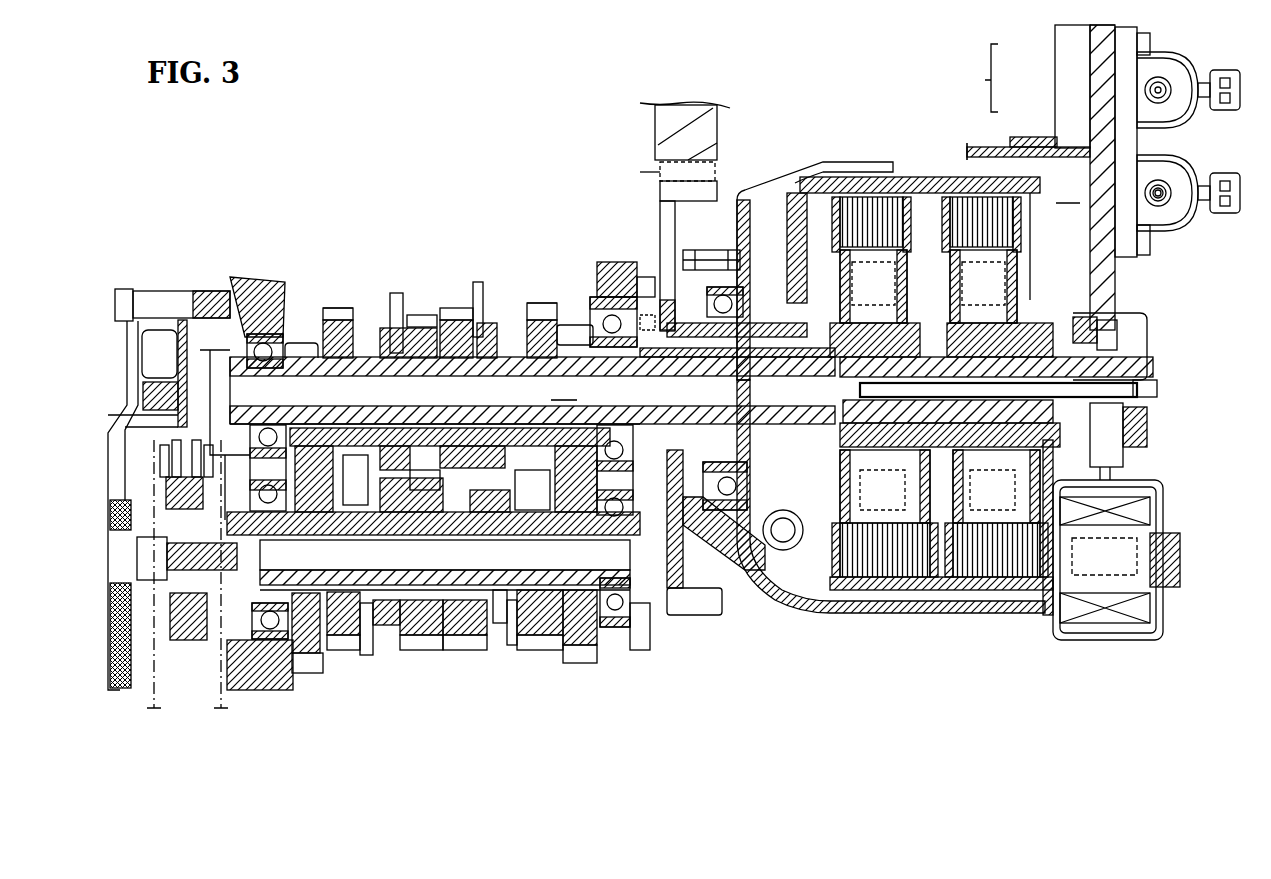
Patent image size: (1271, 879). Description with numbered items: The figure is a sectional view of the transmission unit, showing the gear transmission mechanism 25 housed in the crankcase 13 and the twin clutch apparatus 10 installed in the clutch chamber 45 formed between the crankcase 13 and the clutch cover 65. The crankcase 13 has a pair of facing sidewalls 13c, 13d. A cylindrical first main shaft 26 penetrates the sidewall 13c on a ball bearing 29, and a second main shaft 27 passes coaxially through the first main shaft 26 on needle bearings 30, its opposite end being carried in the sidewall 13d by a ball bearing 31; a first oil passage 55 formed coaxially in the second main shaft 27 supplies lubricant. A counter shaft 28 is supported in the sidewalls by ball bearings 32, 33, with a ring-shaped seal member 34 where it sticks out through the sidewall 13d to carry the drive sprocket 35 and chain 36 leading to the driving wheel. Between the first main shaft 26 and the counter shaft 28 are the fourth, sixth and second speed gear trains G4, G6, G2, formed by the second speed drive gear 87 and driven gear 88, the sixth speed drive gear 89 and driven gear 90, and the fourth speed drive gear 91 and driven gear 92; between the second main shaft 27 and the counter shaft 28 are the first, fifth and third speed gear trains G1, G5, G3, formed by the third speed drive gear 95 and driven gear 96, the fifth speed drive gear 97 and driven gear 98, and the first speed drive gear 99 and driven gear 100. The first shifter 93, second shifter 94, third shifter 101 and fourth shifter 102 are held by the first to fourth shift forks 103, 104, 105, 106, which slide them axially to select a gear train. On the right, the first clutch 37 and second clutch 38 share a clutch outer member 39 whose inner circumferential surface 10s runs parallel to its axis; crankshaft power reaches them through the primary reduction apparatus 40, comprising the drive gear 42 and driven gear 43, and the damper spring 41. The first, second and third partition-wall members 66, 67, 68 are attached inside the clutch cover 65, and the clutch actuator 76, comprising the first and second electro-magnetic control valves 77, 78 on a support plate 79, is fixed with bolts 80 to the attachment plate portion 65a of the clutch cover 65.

The twin clutch apparatus 10 is at (924, 178).
The inner circumferential surface 10s is at (950, 190).
The crankcase 13 is at (225, 285).
The sidewall 13c is at (612, 262).
The sidewall 13d is at (268, 285).
The gear transmission mechanism 25 is at (445, 218).
The first main shaft 26 is at (505, 345).
The second main shaft 27 is at (745, 365).
The counter shaft 28 is at (455, 572).
The ball bearing 29 is at (645, 277).
The needle bearings 30 is at (470, 380).
The ball bearing 31 is at (268, 335).
The ball bearing 32 is at (622, 630).
The ball bearing 33 is at (270, 690).
The seal member 34 is at (222, 655).
The drive sprocket 35 is at (172, 495).
The chain 36 is at (152, 695).
The first clutch 37 is at (928, 592).
The second clutch 38 is at (1043, 592).
The clutch outer member 39 is at (878, 180).
The primary reduction apparatus 40 is at (719, 160).
The damper spring 41 is at (778, 550).
The drive gear 42 is at (658, 173).
The driven gear 43 is at (693, 615).
The clutch chamber 45 is at (1028, 171).
The first oil passage 55 is at (564, 386).
The clutch cover 65 is at (1116, 285).
The attachment plate portion 65a is at (1098, 35).
The first partition-wall member 66 is at (1125, 420).
The second partition-wall member 67 is at (1147, 350).
The third partition-wall member 68 is at (1140, 457).
The clutch actuator 76 is at (977, 78).
The first electro-magnetic control valve 77 is at (1150, 190).
The second electro-magnetic control valve 78 is at (1145, 85).
The support plate 79 is at (1166, 205).
The bolts 80 is at (1150, 42).
The second speed drive gear 87 is at (572, 325).
The second speed driven gear 88 is at (575, 665).
The sixth speed drive gear 89 is at (540, 302).
The sixth speed driven gear 90 is at (545, 652).
The fourth speed drive gear 91 is at (455, 320).
The fourth speed driven gear 92 is at (468, 652).
The first shifter 93 is at (500, 625).
The second shifter 94 is at (490, 323).
The third speed drive gear 95 is at (422, 330).
The third speed driven gear 96 is at (425, 652).
The fifth speed drive gear 97 is at (340, 315).
The fifth speed driven gear 98 is at (343, 652).
The first speed drive gear 99 is at (305, 343).
The first speed driven gear 100 is at (316, 675).
The third shifter 101 is at (395, 330).
The fourth shifter 102 is at (370, 657).
The first shift fork 103 is at (545, 652).
The second shift fork 104 is at (478, 282).
The third shift fork 105 is at (412, 325).
The fourth shift fork 106 is at (362, 657).
The first speed gear train G1 is at (300, 676).
The second speed gear train G2 is at (595, 667).
The third speed gear train G3 is at (413, 655).
The fourth speed gear train G4 is at (452, 655).
The fifth speed gear train G5 is at (335, 306).
The sixth speed gear train G6 is at (545, 312).